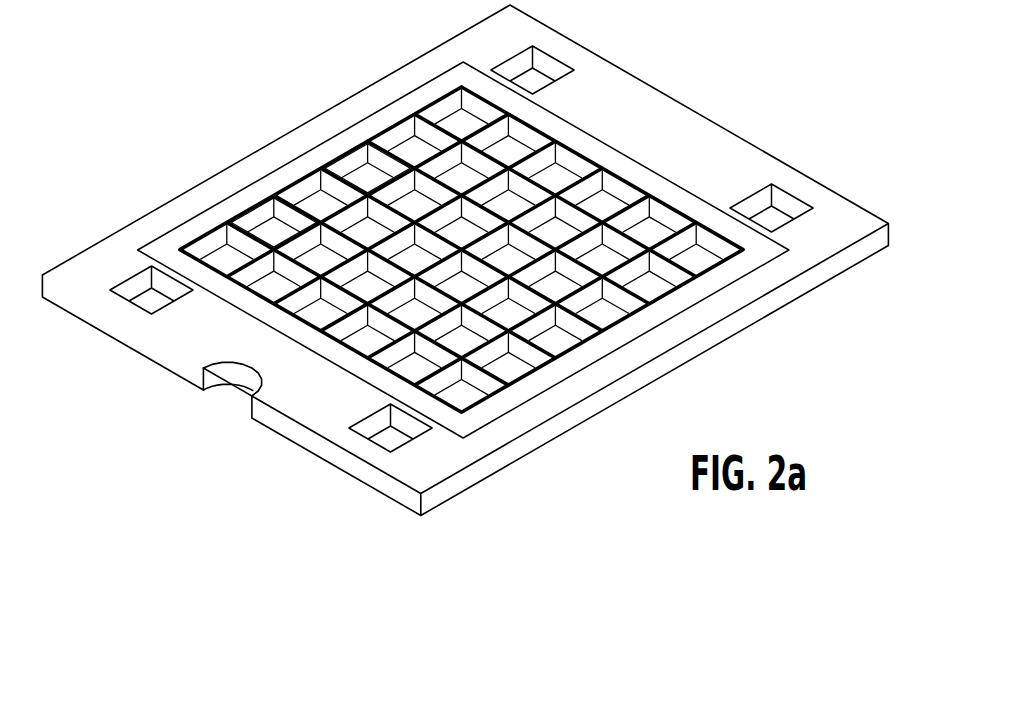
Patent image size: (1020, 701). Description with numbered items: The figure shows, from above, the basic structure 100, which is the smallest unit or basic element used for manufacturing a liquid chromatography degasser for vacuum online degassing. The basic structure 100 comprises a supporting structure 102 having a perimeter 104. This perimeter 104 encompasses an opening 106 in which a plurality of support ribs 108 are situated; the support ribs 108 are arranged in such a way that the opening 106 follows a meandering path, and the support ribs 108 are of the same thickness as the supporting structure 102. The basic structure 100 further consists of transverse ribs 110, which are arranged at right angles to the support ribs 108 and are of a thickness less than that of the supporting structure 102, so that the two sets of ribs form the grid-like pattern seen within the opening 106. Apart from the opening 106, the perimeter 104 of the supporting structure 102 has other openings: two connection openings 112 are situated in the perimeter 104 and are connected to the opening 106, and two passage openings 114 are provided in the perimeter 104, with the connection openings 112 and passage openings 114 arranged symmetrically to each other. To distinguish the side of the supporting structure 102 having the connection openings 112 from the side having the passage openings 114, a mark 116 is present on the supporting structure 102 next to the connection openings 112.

The basic structure 100 is at (238, 88).
The supporting structure 102 is at (722, 129).
The perimeter 104 is at (724, 307).
The opening 106 is at (606, 202).
The support ribs 108 is at (362, 172).
The transverse ribs 110 is at (282, 216).
The connection openings 112 is at (150, 300).
The passage openings 114 is at (550, 63).
The mark 116 is at (234, 389).